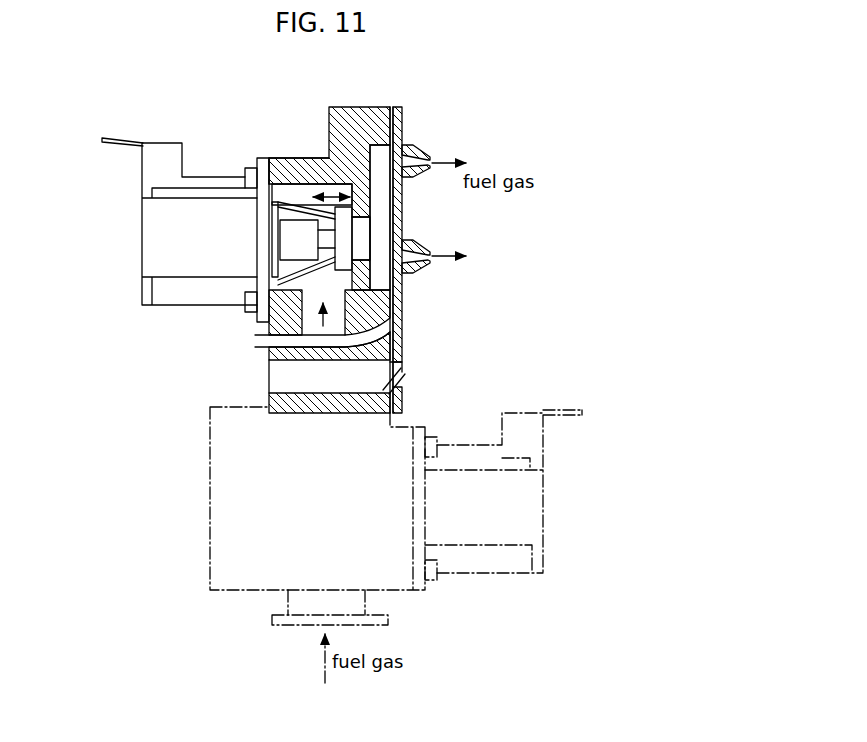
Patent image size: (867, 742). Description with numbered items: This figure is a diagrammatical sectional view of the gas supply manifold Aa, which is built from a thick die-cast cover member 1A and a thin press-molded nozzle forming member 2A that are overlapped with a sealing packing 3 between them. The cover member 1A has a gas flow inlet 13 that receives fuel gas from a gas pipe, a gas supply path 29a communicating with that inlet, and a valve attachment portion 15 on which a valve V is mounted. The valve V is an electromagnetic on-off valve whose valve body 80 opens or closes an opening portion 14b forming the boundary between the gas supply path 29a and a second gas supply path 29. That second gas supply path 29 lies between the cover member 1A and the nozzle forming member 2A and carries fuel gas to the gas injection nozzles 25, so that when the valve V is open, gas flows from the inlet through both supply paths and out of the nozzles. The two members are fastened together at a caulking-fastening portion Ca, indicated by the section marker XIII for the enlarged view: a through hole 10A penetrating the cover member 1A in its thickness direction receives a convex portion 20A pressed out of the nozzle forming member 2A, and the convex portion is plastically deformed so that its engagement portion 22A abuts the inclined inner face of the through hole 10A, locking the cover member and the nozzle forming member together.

The gas supply manifold Aa is at (270, 98).
The valve V is at (222, 175).
The valve attachment portion 15 is at (300, 158).
The cover member 1A is at (345, 110).
The sealing packing 3 is at (391, 107).
The nozzle forming member 2A is at (399, 108).
The gas injection nozzle 25 is at (410, 148).
The gas supply path 29 is at (383, 195).
The opening portion 14b is at (362, 232).
The valve body 80 is at (347, 243).
The gas supply path 29a is at (312, 313).
The through hole 10A is at (275, 378).
The convex portion 20A is at (384, 365).
The engagement portion 22A is at (380, 383).
The caulking-fastening portion Ca is at (402, 358).
The section line XIII is at (410, 380).
The gas flow inlet 13 is at (305, 628).